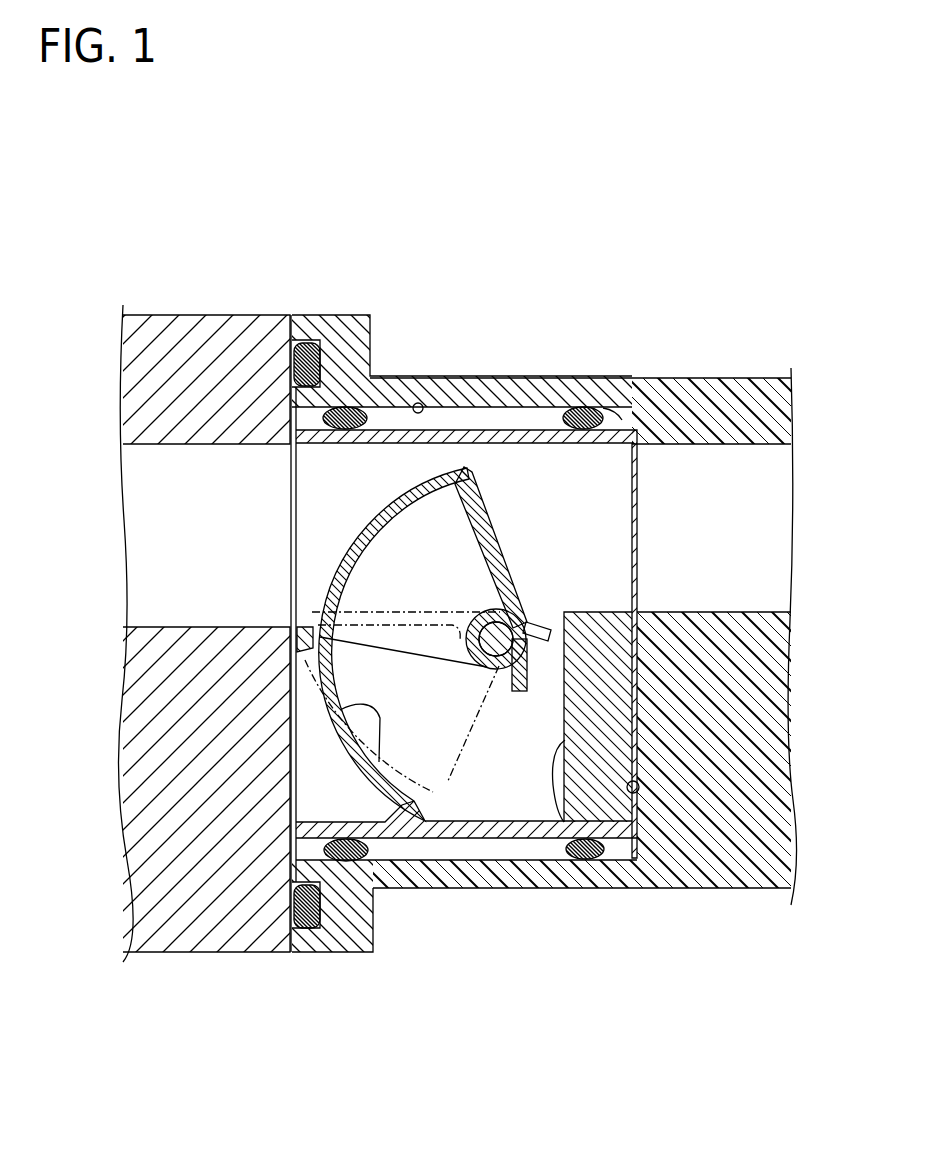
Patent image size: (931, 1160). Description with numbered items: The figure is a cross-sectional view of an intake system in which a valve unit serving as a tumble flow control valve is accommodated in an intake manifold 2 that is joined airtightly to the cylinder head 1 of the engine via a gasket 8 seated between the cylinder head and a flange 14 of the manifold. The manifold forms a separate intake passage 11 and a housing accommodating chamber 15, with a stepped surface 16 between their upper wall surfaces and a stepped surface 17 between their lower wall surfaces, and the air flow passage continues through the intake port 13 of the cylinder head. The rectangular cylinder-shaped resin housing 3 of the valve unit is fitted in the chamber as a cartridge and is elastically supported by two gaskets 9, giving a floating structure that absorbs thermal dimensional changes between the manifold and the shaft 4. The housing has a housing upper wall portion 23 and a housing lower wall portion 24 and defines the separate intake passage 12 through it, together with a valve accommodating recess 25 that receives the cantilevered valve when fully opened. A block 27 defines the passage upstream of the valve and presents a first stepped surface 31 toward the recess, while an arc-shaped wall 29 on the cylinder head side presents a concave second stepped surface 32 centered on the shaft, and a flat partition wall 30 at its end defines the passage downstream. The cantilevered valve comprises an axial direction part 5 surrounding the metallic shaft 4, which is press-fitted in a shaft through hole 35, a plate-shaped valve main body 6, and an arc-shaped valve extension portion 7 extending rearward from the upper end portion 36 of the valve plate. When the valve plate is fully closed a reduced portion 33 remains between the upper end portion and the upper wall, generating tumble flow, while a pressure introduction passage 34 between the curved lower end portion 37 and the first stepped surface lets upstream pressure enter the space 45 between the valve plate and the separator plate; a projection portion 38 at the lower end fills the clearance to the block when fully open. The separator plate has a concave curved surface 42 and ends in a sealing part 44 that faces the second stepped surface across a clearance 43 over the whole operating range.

The cylinder head 1 is at (177, 322).
The intake manifold 2 is at (726, 385).
The housing 3 is at (466, 564).
The housing upper wall portion 23 is at (446, 437).
The shaft 4 is at (497, 648).
The axial direction part 5 is at (478, 660).
The valve main body 6 is at (495, 547).
The valve extension portion 7 is at (351, 546).
The gasket 8 is at (306, 930).
The gasket 9 is at (341, 862).
The separate intake passage 11 is at (690, 540).
The separate intake passage 12 is at (318, 500).
The intake port 13 is at (190, 543).
The flange 14 is at (333, 318).
The housing accommodating chamber 15 is at (418, 402).
The stepped surface 16 is at (625, 412).
The stepped surface 17 is at (640, 795).
The housing lower wall portion 24 is at (386, 833).
The valve accommodating recess 25 is at (476, 785).
The block 27 is at (607, 723).
The arc-shaped wall 29 is at (345, 710).
The partition wall 30 is at (305, 637).
The first stepped surface 31 is at (556, 745).
The second stepped surface 32 is at (378, 900).
The reduced portion 33 is at (458, 453).
The pressure introduction passage 34 is at (545, 668).
The shaft through hole 35 is at (486, 670).
The upper end portion 36 is at (467, 470).
The lower end portion 37 is at (524, 627).
The projection portion 38 is at (518, 692).
The concave curved surface 42 is at (340, 553).
The clearance 43 is at (316, 631).
The sealing part 44 is at (300, 664).
The space 45 is at (417, 568).